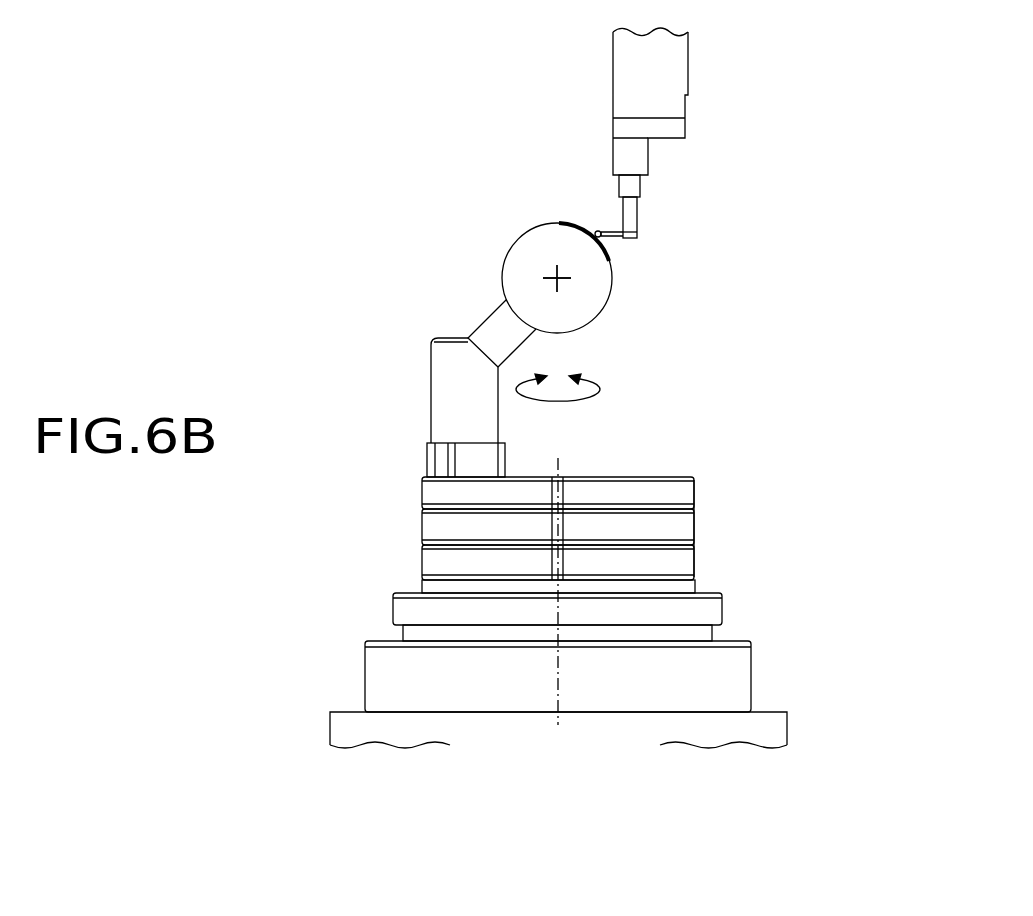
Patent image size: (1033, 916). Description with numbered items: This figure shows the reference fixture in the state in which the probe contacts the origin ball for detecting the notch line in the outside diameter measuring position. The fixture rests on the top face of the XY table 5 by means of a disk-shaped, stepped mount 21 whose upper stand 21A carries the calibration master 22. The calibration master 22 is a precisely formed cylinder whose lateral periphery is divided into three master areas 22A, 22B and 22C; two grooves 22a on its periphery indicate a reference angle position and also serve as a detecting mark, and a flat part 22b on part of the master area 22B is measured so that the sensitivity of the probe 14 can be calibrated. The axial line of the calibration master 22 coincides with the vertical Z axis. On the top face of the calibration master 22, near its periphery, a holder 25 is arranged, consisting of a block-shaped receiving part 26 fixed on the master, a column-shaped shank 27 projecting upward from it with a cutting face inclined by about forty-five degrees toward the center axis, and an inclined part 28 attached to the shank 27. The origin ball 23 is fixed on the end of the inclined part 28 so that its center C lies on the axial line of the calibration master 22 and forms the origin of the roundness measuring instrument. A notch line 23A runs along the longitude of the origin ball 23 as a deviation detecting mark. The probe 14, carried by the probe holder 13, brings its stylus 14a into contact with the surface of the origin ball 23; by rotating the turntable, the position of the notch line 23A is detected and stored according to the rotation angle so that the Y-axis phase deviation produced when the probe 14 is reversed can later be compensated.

The probe holder 13 is at (675, 65).
The probe 14 is at (630, 218).
The stylus 14a is at (595, 231).
The origin ball 23 is at (528, 247).
The notch line 23A is at (576, 230).
The center C is at (560, 282).
The holder 25 is at (415, 389).
The inclined part 28 is at (493, 324).
The shank 27 is at (442, 373).
The receiving part 26 is at (423, 433).
The calibration master 22 is at (534, 511).
The master area 22C is at (427, 495).
The master area 22B is at (427, 530).
The master area 22A is at (427, 566).
The groove 22a is at (567, 493).
The flat part 22b is at (695, 532).
The Z-axis Z is at (557, 574).
The upper stand 21A is at (415, 589).
The mount 21 is at (368, 680).
The XY table 5 is at (775, 717).